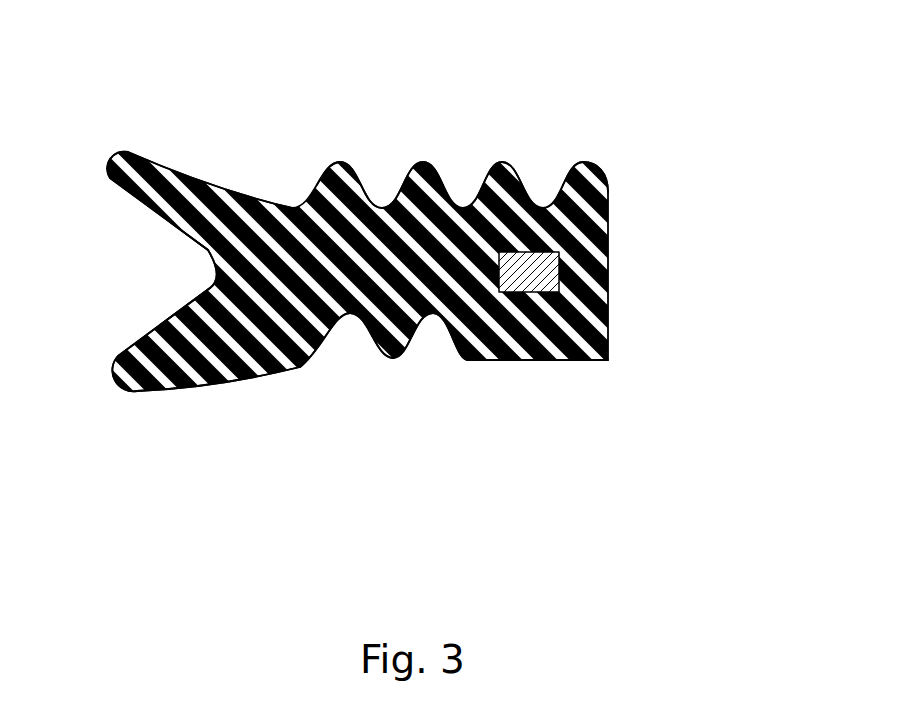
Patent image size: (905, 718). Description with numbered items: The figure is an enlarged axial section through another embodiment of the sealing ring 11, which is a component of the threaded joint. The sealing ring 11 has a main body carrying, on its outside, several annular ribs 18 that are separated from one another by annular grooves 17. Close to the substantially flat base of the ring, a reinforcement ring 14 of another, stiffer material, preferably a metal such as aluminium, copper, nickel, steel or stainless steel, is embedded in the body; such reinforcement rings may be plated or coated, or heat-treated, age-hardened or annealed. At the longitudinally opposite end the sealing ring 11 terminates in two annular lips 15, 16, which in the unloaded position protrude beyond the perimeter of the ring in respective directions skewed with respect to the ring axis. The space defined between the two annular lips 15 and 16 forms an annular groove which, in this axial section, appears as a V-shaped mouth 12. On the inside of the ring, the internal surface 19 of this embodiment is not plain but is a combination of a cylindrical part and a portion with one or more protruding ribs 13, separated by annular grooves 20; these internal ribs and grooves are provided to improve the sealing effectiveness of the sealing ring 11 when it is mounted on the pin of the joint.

The sealing ring 11 is at (682, 131).
The V-shaped mouth 12 is at (193, 275).
The protruding rib 13 is at (395, 340).
The reinforcement ring 14 is at (533, 267).
The annular lip 15 is at (132, 395).
The annular lip 16 is at (137, 150).
The annular groove 17 is at (383, 195).
The annular rib 18 is at (337, 160).
The internal surface 19 is at (515, 362).
The annular groove 20 is at (350, 330).